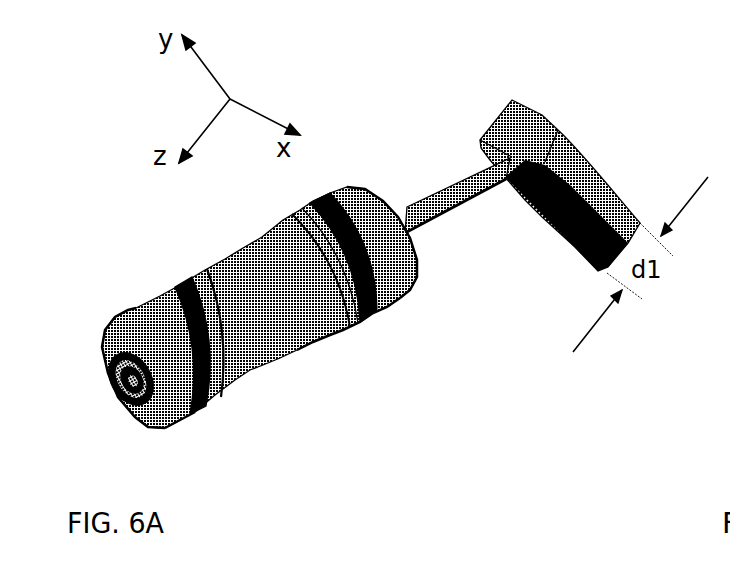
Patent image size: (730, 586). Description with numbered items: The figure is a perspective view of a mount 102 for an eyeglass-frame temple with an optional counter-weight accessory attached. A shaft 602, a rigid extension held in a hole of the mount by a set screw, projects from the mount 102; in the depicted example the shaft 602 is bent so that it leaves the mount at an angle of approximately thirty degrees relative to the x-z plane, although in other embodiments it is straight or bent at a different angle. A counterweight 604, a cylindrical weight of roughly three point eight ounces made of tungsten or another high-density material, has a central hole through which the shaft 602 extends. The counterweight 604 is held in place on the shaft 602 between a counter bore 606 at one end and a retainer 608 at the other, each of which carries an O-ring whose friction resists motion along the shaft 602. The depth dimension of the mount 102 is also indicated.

The mount 102 is at (582, 148).
The shaft 602 is at (417, 203).
The counterweight 604 is at (283, 332).
The counter bore 606 is at (410, 303).
The retainer 608 is at (128, 311).